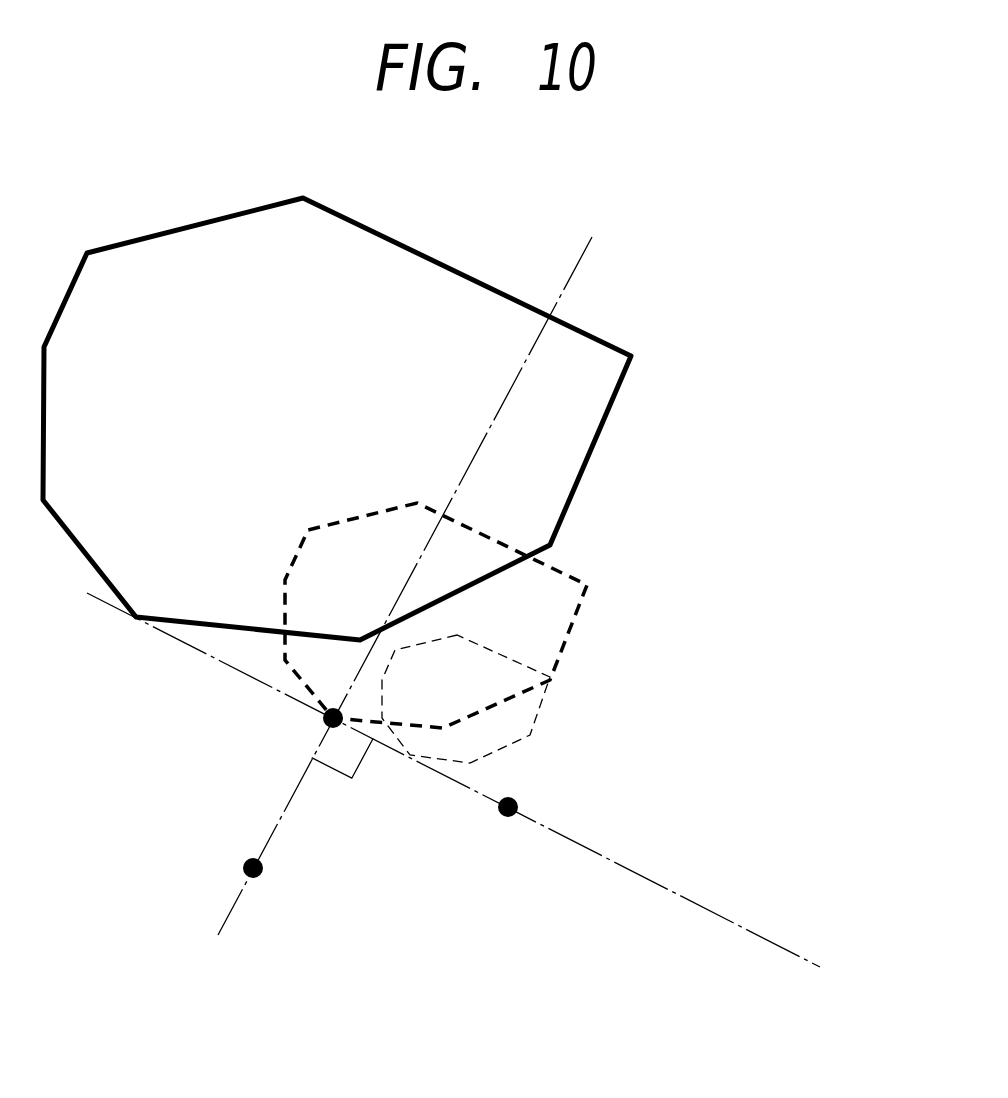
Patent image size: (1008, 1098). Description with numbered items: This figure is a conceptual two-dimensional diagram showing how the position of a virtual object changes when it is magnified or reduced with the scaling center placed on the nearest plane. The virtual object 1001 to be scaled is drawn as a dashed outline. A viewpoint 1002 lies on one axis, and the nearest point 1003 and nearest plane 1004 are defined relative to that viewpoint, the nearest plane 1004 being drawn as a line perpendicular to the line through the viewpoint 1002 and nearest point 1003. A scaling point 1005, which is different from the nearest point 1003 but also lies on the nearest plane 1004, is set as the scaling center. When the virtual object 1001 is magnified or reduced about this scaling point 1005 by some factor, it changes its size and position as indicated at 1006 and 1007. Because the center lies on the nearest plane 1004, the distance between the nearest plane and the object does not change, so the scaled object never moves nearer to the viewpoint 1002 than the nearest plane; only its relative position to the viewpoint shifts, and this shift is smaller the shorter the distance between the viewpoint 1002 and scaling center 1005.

The virtual object 1001 is at (585, 598).
The viewpoint 1002 is at (243, 866).
The nearest point 1003 is at (322, 719).
The nearest plane 1004 is at (782, 943).
The scaling point 1005 is at (518, 802).
The magnified object 1006 is at (620, 392).
The reduced object 1007 is at (538, 715).